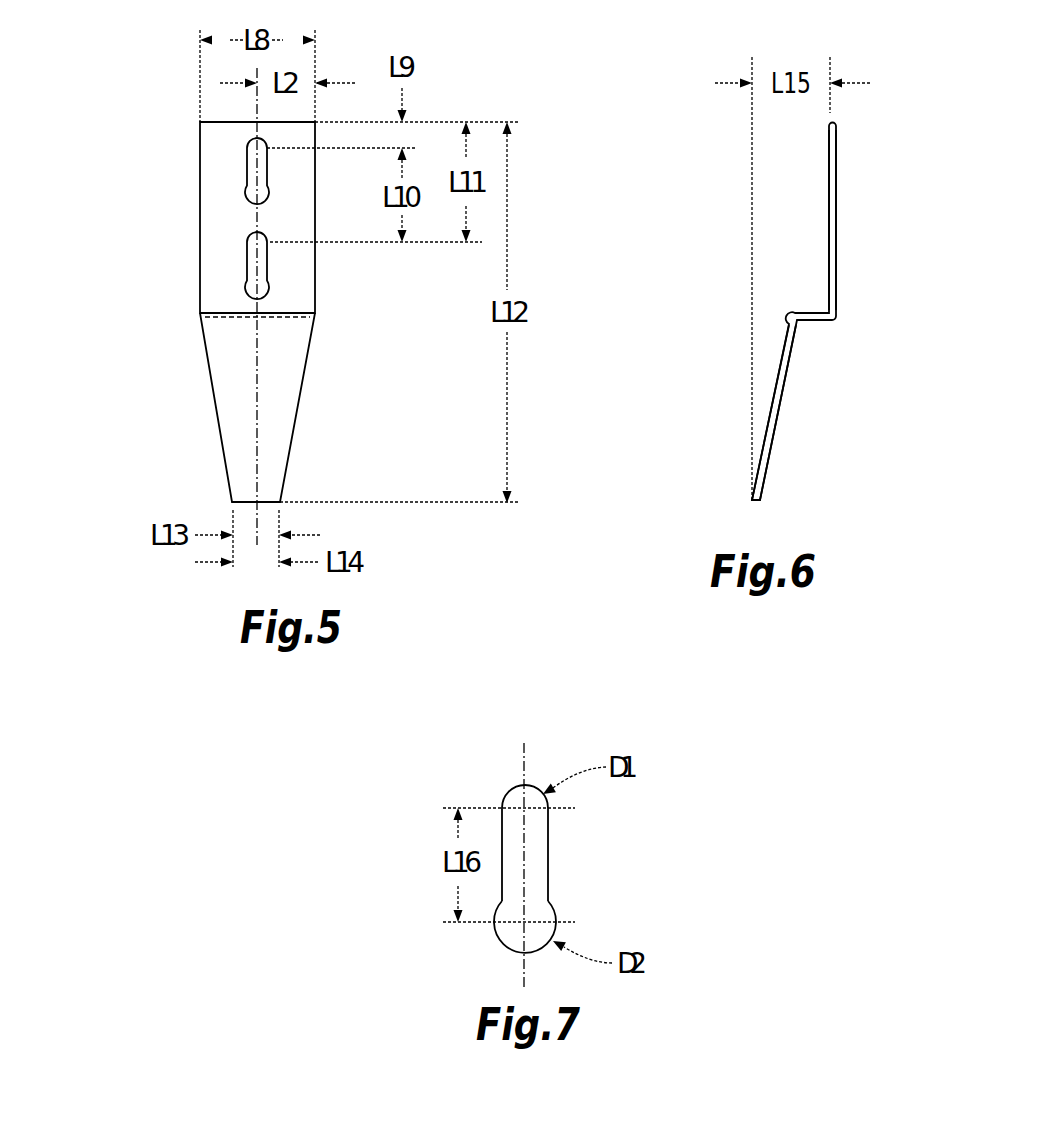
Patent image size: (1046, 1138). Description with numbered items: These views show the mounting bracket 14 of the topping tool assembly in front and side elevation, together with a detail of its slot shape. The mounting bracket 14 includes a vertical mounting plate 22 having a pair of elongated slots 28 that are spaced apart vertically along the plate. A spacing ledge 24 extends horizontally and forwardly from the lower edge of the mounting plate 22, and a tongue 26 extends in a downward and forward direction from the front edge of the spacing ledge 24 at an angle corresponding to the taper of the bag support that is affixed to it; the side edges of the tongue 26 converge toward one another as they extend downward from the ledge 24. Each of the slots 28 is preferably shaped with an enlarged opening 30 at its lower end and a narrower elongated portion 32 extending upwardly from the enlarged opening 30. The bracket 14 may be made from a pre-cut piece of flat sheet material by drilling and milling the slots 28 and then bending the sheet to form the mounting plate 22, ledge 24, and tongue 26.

In FIG. 5, the mounting bracket 14 is at (151, 149).
In FIG. 6, the mounting bracket 14 is at (870, 192).
In FIG. 5, the vertical mounting plate 22 is at (215, 215).
In FIG. 6, the vertical mounting plate 22 is at (836, 240).
In FIG. 5, the spacing ledge 24 is at (228, 318).
In FIG. 6, the spacing ledge 24 is at (812, 310).
In FIG. 5, the tongue 26 is at (236, 427).
In FIG. 6, the tongue 26 is at (780, 417).
In FIG. 5, the elongated slots 28 is at (262, 200).
In FIG. 7, the elongated slots 28 is at (602, 816).
In FIG. 7, the enlarged opening 30 is at (537, 937).
In FIG. 7, the elongated portion 32 is at (504, 866).